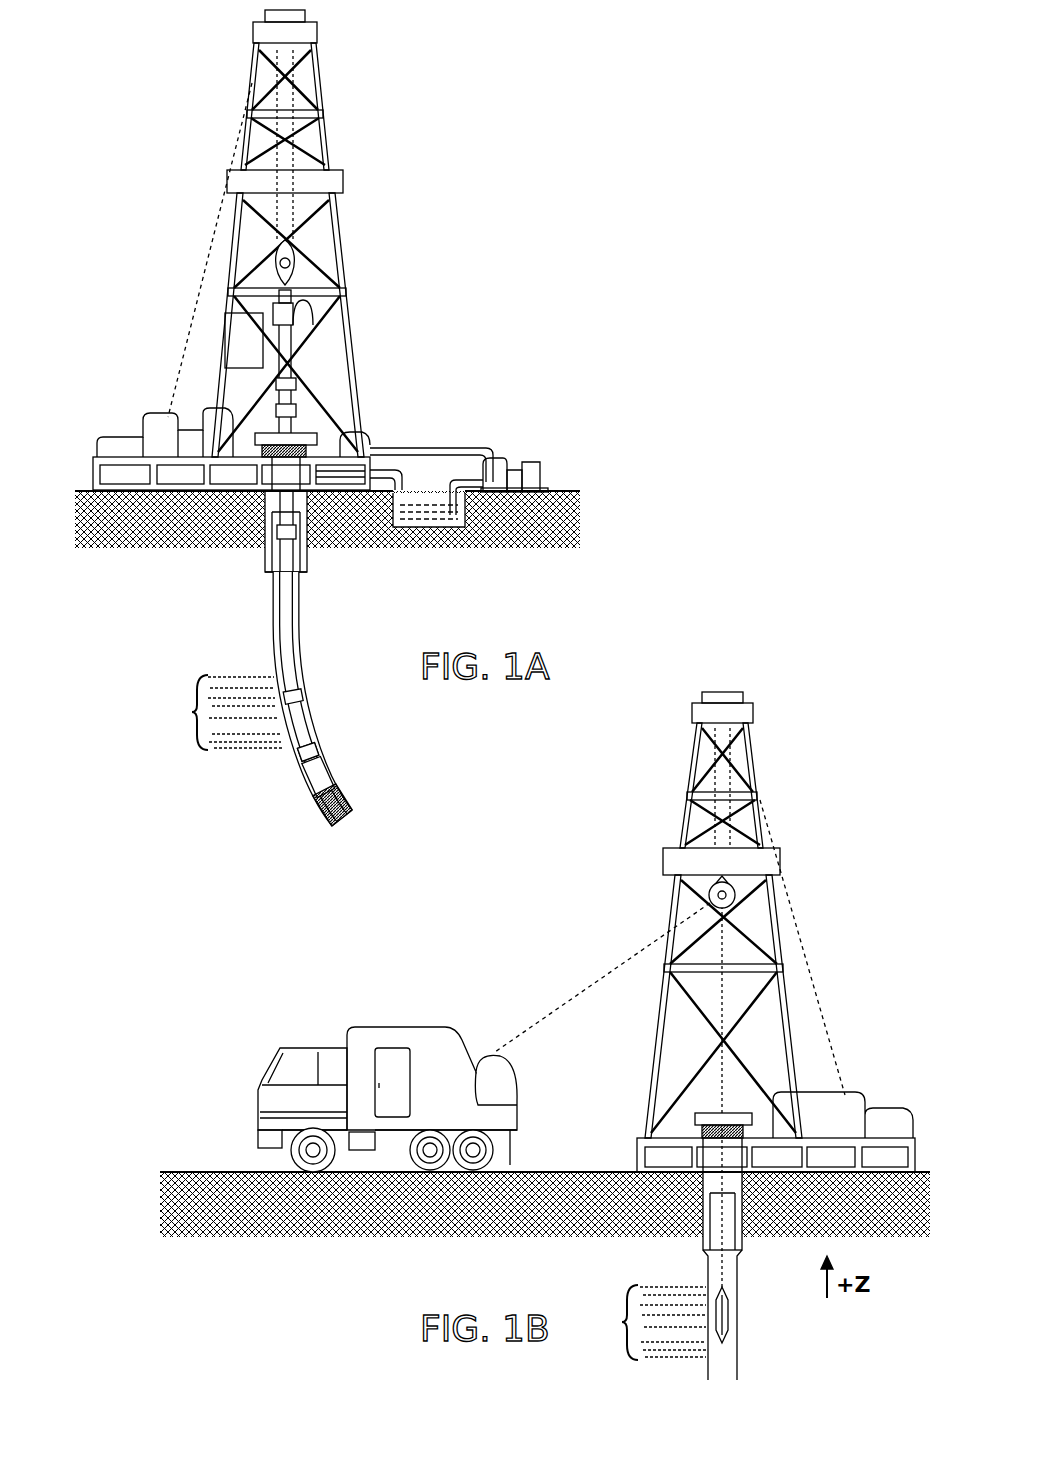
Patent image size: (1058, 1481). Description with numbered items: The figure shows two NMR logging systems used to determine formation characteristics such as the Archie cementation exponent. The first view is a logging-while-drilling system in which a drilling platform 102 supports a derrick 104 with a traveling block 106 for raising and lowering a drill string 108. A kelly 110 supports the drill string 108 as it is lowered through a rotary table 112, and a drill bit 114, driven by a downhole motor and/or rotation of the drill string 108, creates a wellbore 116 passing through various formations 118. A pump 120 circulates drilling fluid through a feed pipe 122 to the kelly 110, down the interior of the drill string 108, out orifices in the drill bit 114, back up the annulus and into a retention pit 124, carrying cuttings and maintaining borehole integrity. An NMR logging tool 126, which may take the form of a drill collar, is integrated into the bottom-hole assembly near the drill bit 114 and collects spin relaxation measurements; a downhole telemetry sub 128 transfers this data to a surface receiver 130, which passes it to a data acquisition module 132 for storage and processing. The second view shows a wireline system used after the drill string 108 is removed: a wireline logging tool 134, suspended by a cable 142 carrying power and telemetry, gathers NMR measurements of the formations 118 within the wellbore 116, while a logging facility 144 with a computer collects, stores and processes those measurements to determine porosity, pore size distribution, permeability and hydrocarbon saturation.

In FIG. 1A, the drilling platform 102 is at (93, 470).
In FIG. 1B, the drilling platform 102 is at (637, 1162).
In FIG. 1A, the derrick 104 is at (323, 123).
In FIG. 1B, the derrick 104 is at (645, 1130).
In FIG. 1A, the traveling block 106 is at (296, 262).
In FIG. 1B, the traveling block 106 is at (755, 880).
In FIG. 1A, the drill string 108 is at (293, 613).
In FIG. 1A, the kelly 110 is at (297, 323).
In FIG. 1A, the rotary table 112 is at (298, 432).
In FIG. 1B, the rotary table 112 is at (705, 1112).
In FIG. 1A, the drill bit 114 is at (325, 812).
In FIG. 1A, the wellbore 116 is at (307, 646).
In FIG. 1A, the formations 118 is at (209, 712).
In FIG. 1B, the formations 118 is at (643, 1322).
In FIG. 1A, the pump 120 is at (508, 458).
In FIG. 1A, the feed pipe 122 is at (437, 447).
In FIG. 1A, the retention pit 124 is at (418, 507).
In FIG. 1A, the NMR logging tool 126 is at (315, 787).
In FIG. 1A, the downhole telemetry sub 128 is at (302, 760).
In FIG. 1A, the surface receiver 130 is at (305, 388).
In FIG. 1A, the data acquisition module 132 is at (168, 416).
In FIG. 1B, the wireline logging tool 134 is at (730, 1313).
In FIG. 1B, the cable 142 is at (642, 945).
In FIG. 1B, the logging facility 144 is at (418, 1025).